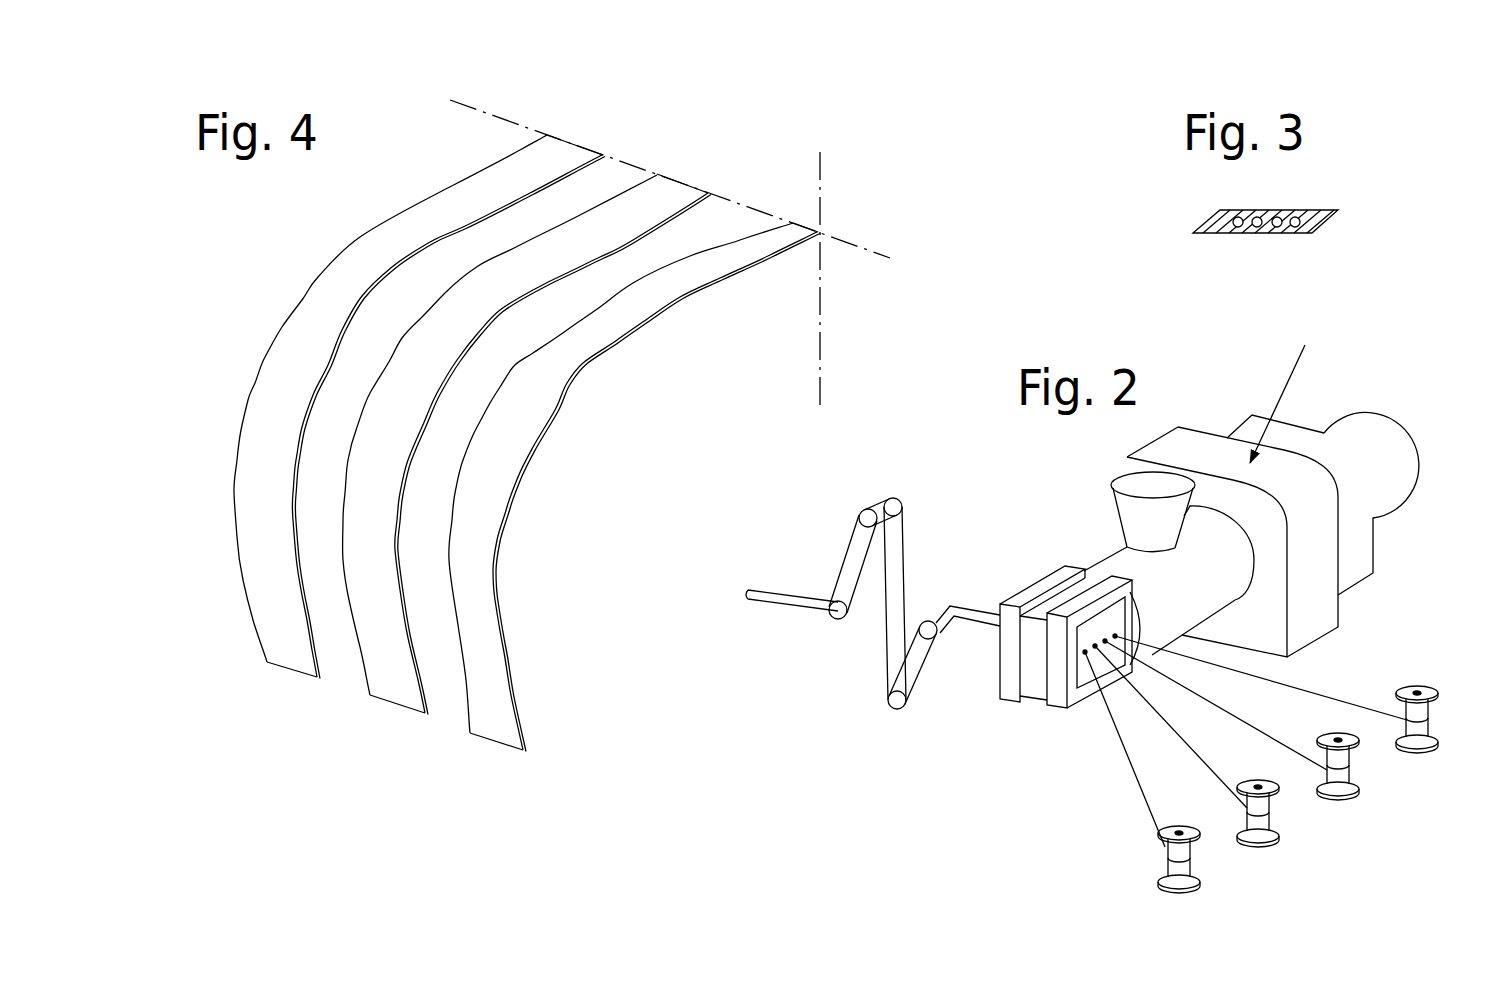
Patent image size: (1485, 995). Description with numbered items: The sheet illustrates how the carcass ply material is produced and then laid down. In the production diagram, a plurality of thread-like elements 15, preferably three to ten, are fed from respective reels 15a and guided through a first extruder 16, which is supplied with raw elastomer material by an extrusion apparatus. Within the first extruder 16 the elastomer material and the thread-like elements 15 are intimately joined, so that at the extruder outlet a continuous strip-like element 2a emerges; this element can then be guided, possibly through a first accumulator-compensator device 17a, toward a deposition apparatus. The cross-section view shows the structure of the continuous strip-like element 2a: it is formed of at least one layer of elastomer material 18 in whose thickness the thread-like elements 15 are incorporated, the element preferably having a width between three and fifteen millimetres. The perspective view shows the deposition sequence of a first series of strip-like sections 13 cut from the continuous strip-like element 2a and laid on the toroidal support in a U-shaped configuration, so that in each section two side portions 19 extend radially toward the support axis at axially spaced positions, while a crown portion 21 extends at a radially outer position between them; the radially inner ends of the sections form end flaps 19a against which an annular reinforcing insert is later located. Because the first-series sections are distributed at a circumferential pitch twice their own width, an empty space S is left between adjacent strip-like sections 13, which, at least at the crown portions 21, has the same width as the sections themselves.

In FIG. 3, the continuous strip-like element 2a is at (1262, 224).
In FIG. 2, the continuous strip-like element 2a is at (897, 563).
In FIG. 4, the strip-like sections 13 is at (317, 277).
In FIG. 3, the thread-like elements 15 is at (1233, 227).
In FIG. 2, the thread-like elements 15 is at (1152, 805).
In FIG. 2, the reels 15a is at (1180, 889).
In FIG. 2, the first extruder 16 is at (1033, 593).
In FIG. 2, the first accumulator-compensator device 17a is at (920, 503).
In FIG. 3, the layer of elastomer material 18 is at (1220, 213).
In FIG. 4, the side portions 19 is at (257, 524).
In FIG. 4, the end flaps 19a is at (282, 660).
In FIG. 4, the crown portion 21 is at (553, 155).
In FIG. 4, the empty space S is at (603, 183).